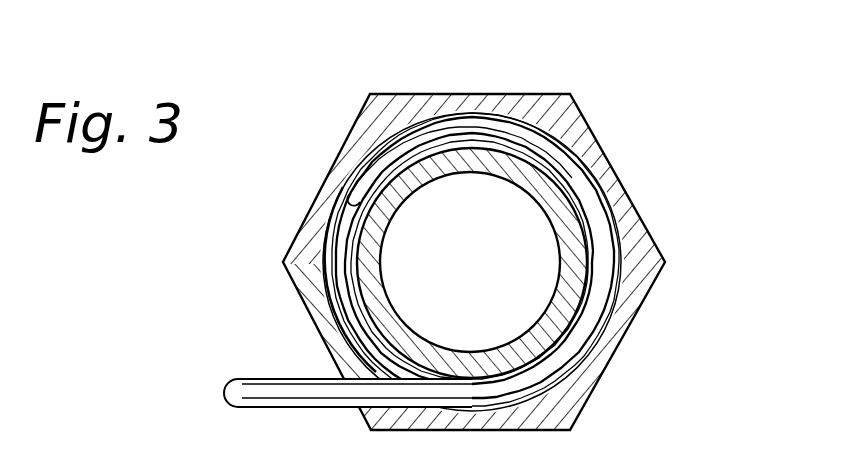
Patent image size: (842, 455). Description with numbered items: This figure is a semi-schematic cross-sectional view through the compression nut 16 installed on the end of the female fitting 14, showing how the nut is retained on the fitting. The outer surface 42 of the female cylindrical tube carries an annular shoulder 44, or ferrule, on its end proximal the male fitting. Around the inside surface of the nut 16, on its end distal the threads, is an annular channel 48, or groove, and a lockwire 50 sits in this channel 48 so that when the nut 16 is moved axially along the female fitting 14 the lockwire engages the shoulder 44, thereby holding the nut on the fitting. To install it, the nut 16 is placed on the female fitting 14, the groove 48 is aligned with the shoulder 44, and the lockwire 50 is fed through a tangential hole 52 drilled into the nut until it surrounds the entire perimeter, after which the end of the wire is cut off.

The female fitting 14 is at (547, 226).
The nut 16 is at (466, 78).
The outer surface 42 is at (357, 276).
The annular shoulder 44 is at (339, 307).
The annular channel 48 is at (324, 235).
The lockwire 50 is at (568, 168).
The tangential hole 52 is at (346, 377).